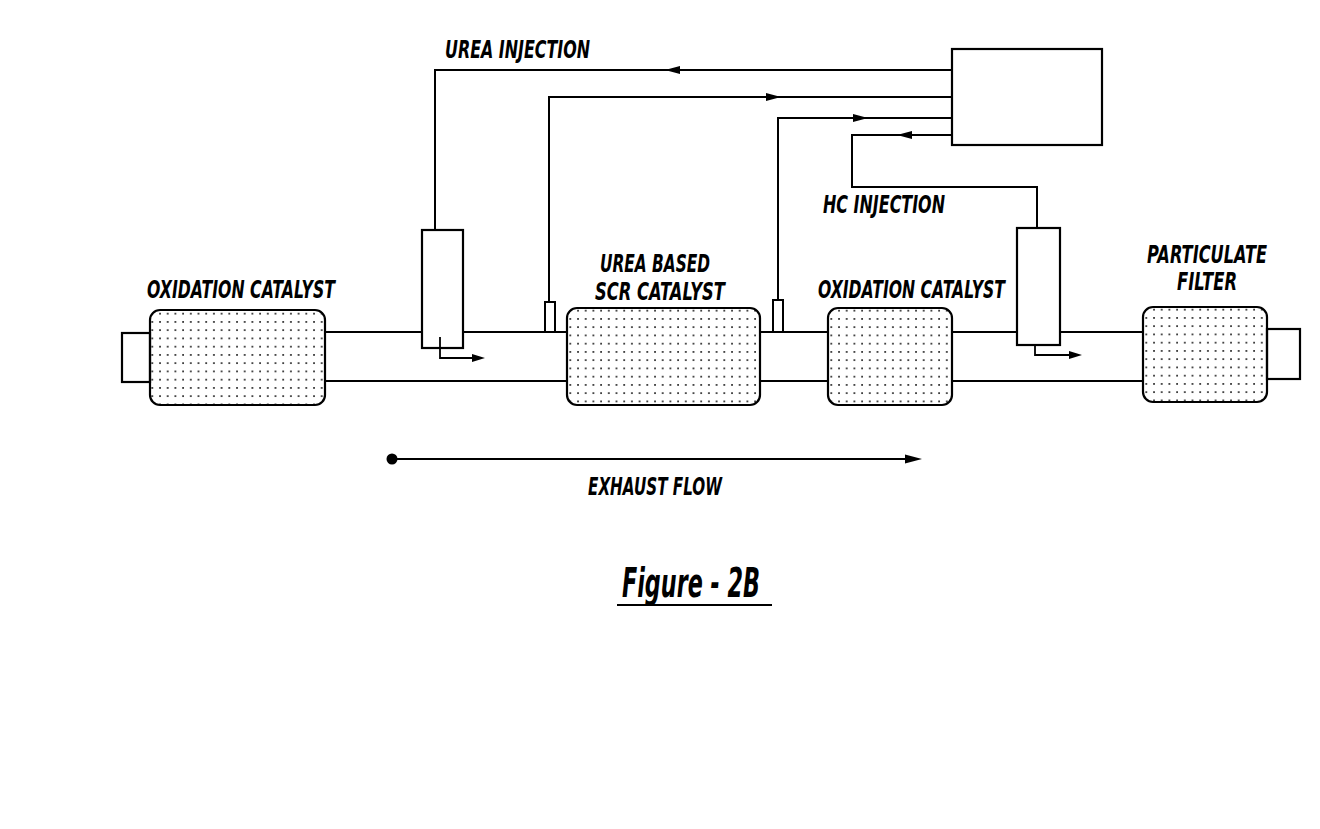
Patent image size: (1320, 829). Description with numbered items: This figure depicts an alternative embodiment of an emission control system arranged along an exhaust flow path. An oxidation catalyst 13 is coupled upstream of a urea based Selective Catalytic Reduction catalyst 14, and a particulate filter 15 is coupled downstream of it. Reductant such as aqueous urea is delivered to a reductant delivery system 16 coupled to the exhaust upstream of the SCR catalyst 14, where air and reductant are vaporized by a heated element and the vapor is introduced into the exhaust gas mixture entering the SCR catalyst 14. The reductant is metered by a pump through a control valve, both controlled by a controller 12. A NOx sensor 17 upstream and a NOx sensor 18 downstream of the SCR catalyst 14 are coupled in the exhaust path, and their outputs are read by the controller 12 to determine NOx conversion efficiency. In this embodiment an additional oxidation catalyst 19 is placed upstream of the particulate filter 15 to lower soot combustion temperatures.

The controller 12 is at (1067, 49).
The oxidation catalyst 13 is at (250, 405).
The urea based Selective Catalytic Reduction catalyst 14 is at (688, 405).
The particulate filter 15 is at (1228, 402).
The reductant delivery system 16 is at (462, 230).
The NOx sensor 17 is at (545, 318).
The NOx sensor 18 is at (785, 318).
The additional oxidation catalyst 19 is at (945, 405).